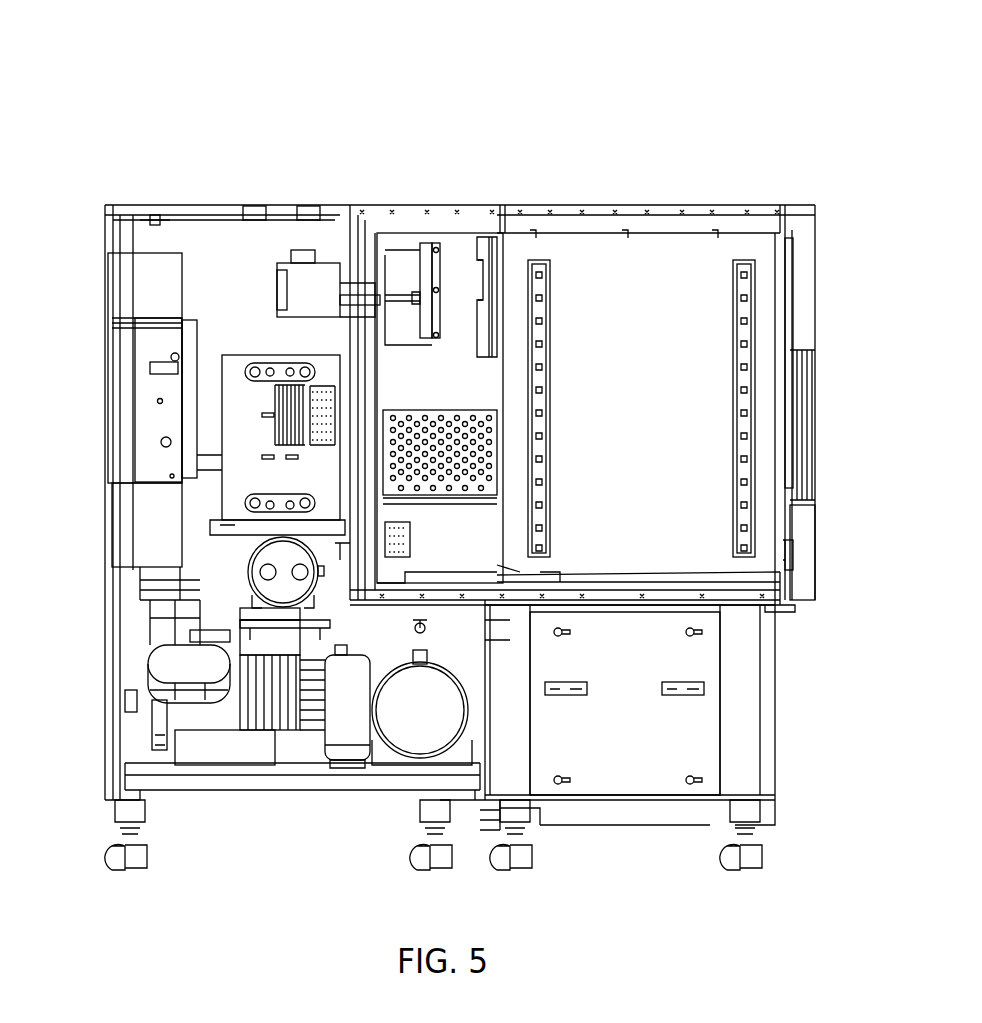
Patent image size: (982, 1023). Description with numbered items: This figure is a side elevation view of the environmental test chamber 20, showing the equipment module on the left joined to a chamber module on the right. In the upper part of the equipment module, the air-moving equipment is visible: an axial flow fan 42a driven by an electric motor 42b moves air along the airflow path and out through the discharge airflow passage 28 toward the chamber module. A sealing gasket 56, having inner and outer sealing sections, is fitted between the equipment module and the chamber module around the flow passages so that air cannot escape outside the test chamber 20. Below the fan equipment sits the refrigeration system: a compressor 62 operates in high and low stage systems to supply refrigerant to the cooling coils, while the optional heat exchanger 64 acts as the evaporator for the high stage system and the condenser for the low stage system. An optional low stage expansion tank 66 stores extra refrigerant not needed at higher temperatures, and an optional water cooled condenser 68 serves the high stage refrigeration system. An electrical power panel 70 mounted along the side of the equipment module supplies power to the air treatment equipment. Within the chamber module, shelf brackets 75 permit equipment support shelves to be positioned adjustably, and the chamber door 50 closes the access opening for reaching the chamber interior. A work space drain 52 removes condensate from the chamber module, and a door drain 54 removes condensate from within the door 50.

The environmental test chamber 20 is at (338, 58).
The discharge airflow passage 28 is at (483, 280).
The axial flow fan 42a is at (432, 263).
The electric motor 42b is at (278, 265).
The chamber door 50 is at (815, 450).
The work space drain 52 is at (548, 592).
The door drain 54 is at (790, 612).
The sealing gasket 56 is at (505, 214).
The compressor 62 is at (185, 690).
The heat exchanger 64 is at (245, 370).
The low stage expansion tank 66 is at (420, 750).
The water cooled condenser 68 is at (258, 578).
The electrical power panel 70 is at (135, 412).
The shelf bracket 75 is at (752, 312).